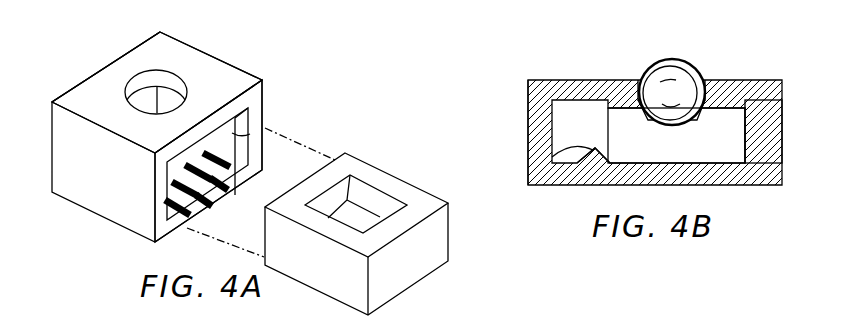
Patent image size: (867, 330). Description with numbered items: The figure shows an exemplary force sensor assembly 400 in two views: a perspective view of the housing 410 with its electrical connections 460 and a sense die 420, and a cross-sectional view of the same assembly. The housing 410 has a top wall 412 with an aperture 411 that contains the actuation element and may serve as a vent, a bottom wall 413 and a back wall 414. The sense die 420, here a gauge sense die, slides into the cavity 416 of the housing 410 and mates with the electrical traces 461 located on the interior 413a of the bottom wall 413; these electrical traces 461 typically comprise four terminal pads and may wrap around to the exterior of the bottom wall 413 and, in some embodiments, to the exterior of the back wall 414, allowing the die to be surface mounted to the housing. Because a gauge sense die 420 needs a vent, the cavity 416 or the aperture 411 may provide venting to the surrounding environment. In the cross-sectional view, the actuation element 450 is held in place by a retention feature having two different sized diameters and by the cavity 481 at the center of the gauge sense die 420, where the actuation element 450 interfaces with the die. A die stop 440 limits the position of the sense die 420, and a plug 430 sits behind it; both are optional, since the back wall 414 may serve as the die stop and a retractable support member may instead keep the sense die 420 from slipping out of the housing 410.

In FIG. 4A, the force sensor assembly 400 is at (350, 72).
In FIG. 4B, the force sensor assembly 400 is at (766, 54).
In FIG. 4A, the housing 410 is at (209, 37).
In FIG. 4B, the housing 410 is at (580, 70).
In FIG. 4A, the aperture 411 is at (140, 78).
In FIG. 4A, the top wall 412 is at (217, 74).
In FIG. 4A, the bottom wall 413 is at (148, 228).
In FIG. 4A, the interior of the bottom wall 413a is at (300, 144).
In FIG. 4A, the back wall 414 is at (85, 72).
In FIG. 4B, the back wall 414 is at (540, 112).
In FIG. 4A, the cavity 416 is at (264, 127).
In FIG. 4A, the sense die 420 is at (386, 160).
In FIG. 4B, the sense die 420 is at (693, 152).
In FIG. 4B, the plug 430 is at (765, 133).
In FIG. 4B, the die stop 440 is at (528, 157).
In FIG. 4B, the actuation element 450 is at (685, 59).
In FIG. 4A, the electrical connections 460 is at (185, 218).
In FIG. 4A, the electrical traces 461 is at (184, 214).
In FIG. 4B, the cavity at the center of the gauge sense die 481 is at (655, 60).